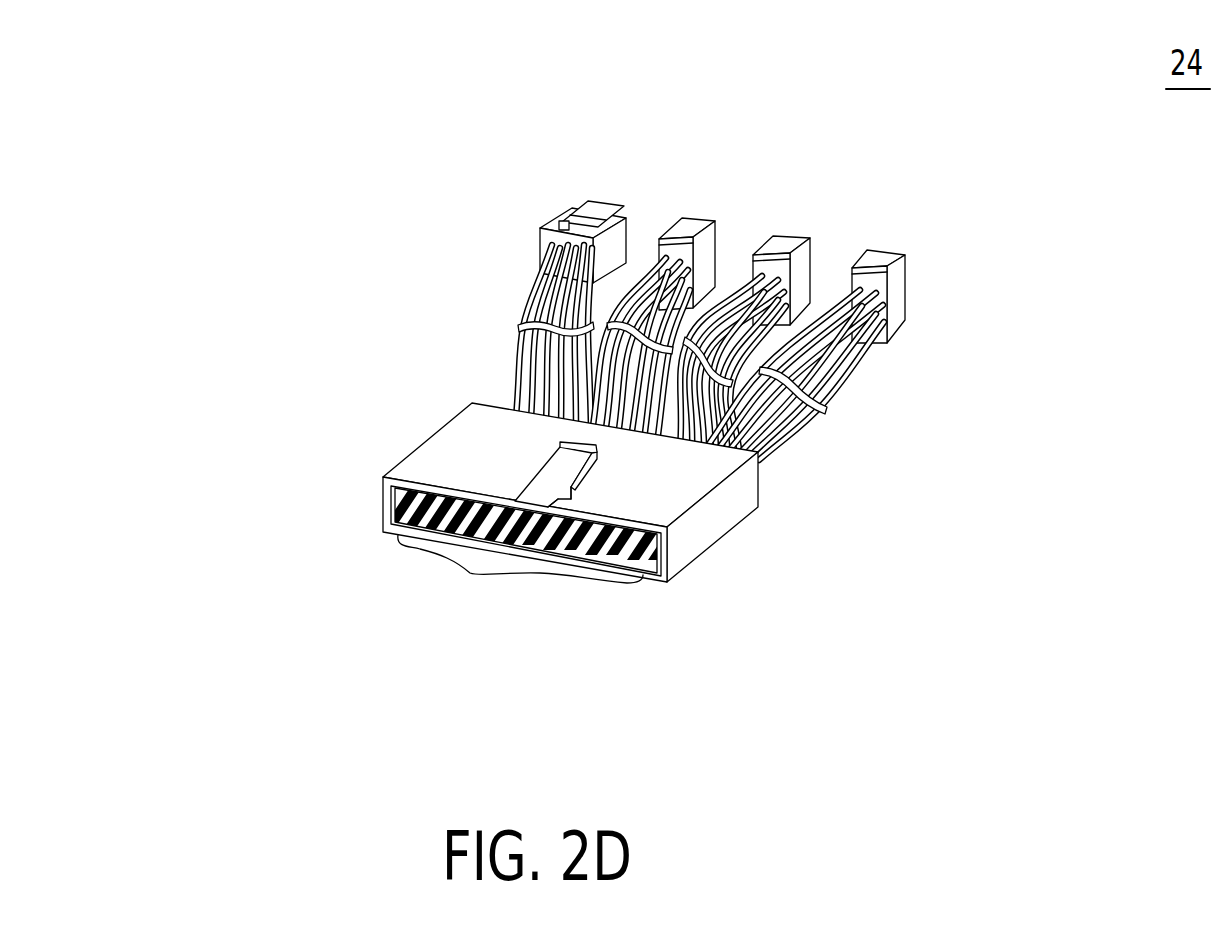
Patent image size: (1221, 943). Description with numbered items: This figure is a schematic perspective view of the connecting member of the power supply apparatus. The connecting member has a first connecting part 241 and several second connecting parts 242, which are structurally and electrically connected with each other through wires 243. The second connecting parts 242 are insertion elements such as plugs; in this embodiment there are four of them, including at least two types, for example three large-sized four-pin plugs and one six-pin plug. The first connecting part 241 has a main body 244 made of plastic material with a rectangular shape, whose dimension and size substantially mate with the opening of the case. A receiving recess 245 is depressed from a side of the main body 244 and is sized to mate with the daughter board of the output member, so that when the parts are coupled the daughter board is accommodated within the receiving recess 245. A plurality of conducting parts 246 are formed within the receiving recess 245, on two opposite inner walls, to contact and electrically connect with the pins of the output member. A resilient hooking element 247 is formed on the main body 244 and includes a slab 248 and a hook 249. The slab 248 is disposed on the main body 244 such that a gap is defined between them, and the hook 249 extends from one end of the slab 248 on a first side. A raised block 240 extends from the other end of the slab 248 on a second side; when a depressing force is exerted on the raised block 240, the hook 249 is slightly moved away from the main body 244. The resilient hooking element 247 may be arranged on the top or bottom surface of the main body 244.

The raised block 240 is at (557, 473).
The first connecting part 241 is at (774, 489).
The second connecting parts 242 is at (882, 238).
The wires 243 is at (857, 360).
The main body 244 is at (472, 437).
The receiving recess 245 is at (587, 579).
The conducting parts 246 is at (520, 574).
The resilient hooking element 247 is at (872, 573).
The slab 248 is at (573, 485).
The hook 249 is at (563, 533).